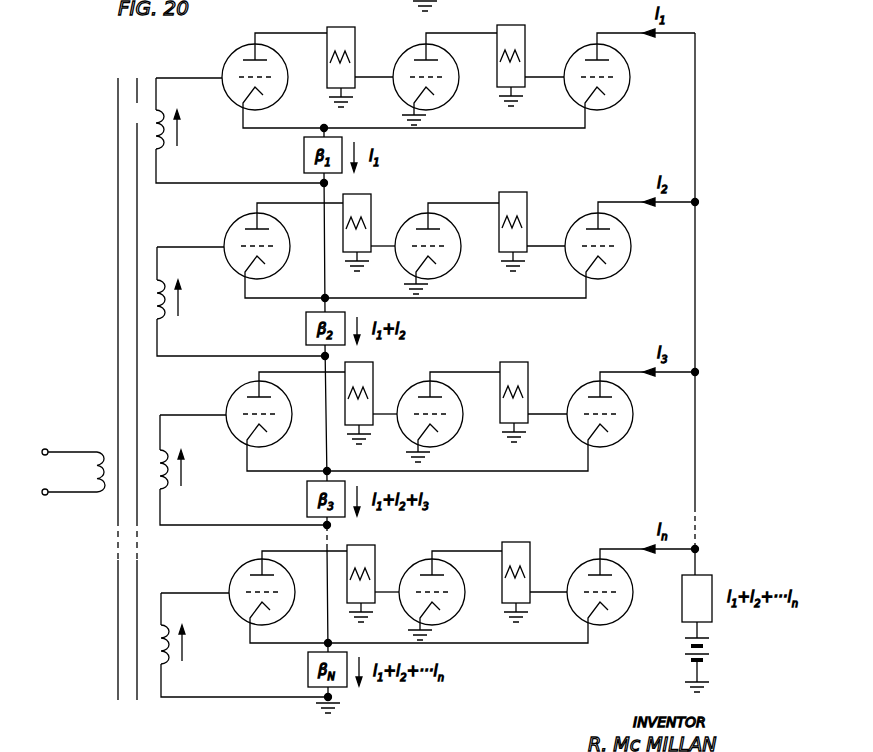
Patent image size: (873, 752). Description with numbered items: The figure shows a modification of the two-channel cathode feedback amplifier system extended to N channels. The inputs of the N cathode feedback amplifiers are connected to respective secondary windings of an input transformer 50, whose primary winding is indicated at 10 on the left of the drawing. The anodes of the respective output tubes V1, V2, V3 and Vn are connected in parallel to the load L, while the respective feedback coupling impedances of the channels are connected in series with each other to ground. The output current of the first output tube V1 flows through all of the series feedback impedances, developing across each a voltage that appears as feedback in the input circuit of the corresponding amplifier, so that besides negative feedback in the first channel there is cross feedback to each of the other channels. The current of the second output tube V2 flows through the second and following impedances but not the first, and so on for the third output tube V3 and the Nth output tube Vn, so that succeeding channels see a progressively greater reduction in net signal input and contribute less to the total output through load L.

The input transformer 50 is at (112, 279).
The input transformer primary winding 10 is at (60, 460).
The output tube of the first channel V1 is at (628, 82).
The output tube of the second channel V2 is at (630, 249).
The output tube of the third channel V3 is at (633, 416).
The output tube of the Nth channel Vn is at (628, 598).
The load L is at (697, 633).